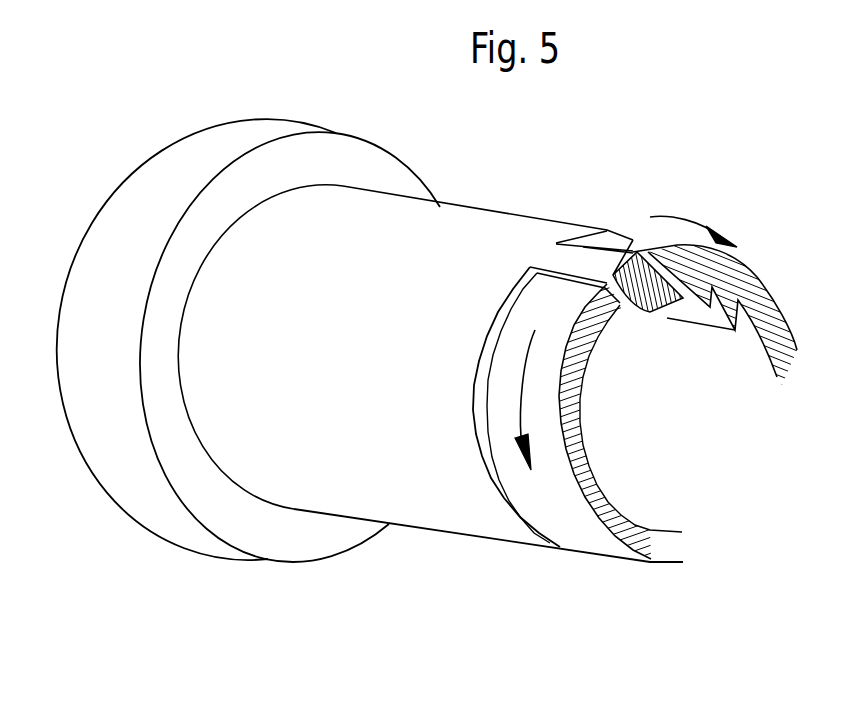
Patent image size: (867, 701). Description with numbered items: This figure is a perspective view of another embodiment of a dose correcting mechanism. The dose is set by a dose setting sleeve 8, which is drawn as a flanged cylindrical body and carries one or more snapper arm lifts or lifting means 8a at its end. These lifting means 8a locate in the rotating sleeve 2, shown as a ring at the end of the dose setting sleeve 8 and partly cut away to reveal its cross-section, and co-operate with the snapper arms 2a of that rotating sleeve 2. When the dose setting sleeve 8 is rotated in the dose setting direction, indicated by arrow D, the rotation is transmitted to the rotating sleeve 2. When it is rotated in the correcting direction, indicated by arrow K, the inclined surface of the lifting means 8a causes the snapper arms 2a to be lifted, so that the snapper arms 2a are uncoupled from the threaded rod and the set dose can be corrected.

The dose setting sleeve 8 is at (402, 490).
The snapper arm lifts or lifting means 8a is at (637, 252).
The rotating sleeve 2 is at (647, 553).
The snapper arms 2a is at (737, 286).
The correcting direction (arrow) K is at (685, 218).
The dose setting direction (arrow) D is at (517, 385).